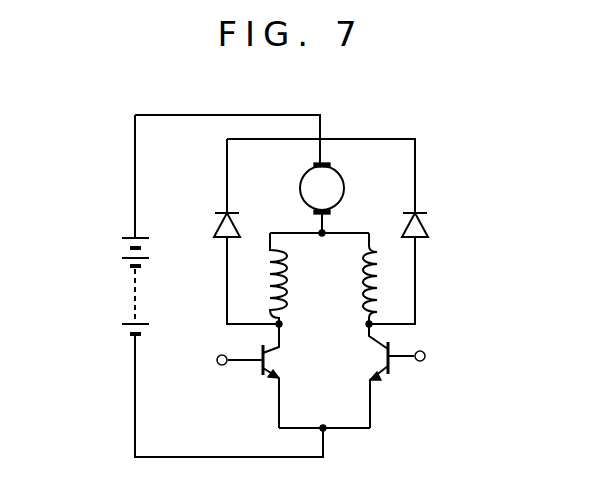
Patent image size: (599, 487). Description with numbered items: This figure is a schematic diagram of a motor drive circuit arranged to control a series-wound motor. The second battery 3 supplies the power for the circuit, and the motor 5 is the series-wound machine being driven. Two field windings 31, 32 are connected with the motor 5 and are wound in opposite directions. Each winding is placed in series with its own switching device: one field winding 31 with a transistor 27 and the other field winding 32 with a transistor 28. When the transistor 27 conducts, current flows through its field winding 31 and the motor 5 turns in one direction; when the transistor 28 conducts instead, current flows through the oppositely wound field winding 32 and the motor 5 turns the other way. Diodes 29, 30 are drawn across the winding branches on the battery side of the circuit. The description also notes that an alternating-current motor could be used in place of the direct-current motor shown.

The second battery 3 is at (118, 246).
The motor 5 is at (330, 185).
The transistor 27 is at (263, 378).
The transistor 28 is at (392, 374).
The diode 29 is at (218, 228).
The diode 30 is at (432, 222).
The field winding 31 is at (268, 292).
The field winding 32 is at (385, 278).